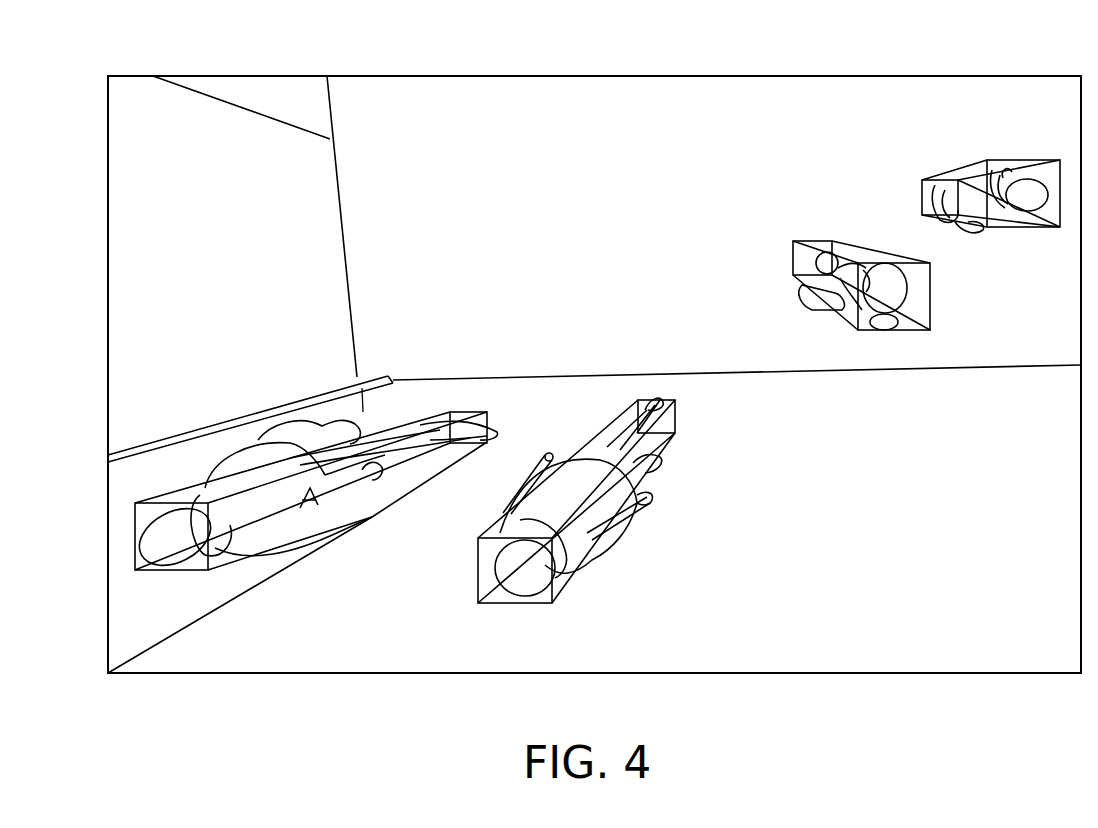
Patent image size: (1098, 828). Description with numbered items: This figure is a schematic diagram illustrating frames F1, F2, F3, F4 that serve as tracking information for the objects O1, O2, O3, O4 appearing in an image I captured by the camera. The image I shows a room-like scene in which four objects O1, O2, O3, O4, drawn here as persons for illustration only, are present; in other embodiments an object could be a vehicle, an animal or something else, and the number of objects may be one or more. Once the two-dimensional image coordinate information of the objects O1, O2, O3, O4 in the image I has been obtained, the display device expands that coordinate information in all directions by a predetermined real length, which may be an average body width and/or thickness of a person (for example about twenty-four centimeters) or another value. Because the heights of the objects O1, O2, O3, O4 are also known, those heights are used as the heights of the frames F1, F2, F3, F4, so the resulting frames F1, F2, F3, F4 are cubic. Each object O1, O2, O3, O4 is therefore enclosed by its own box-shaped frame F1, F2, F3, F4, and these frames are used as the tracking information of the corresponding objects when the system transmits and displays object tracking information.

The image I is at (1010, 72).
The frame F1 is at (463, 412).
The frame F2 is at (645, 400).
The frame F3 is at (813, 240).
The frame F4 is at (929, 180).
The object O1 is at (314, 507).
The object O2 is at (576, 503).
The object O3 is at (861, 292).
The object O4 is at (991, 183).